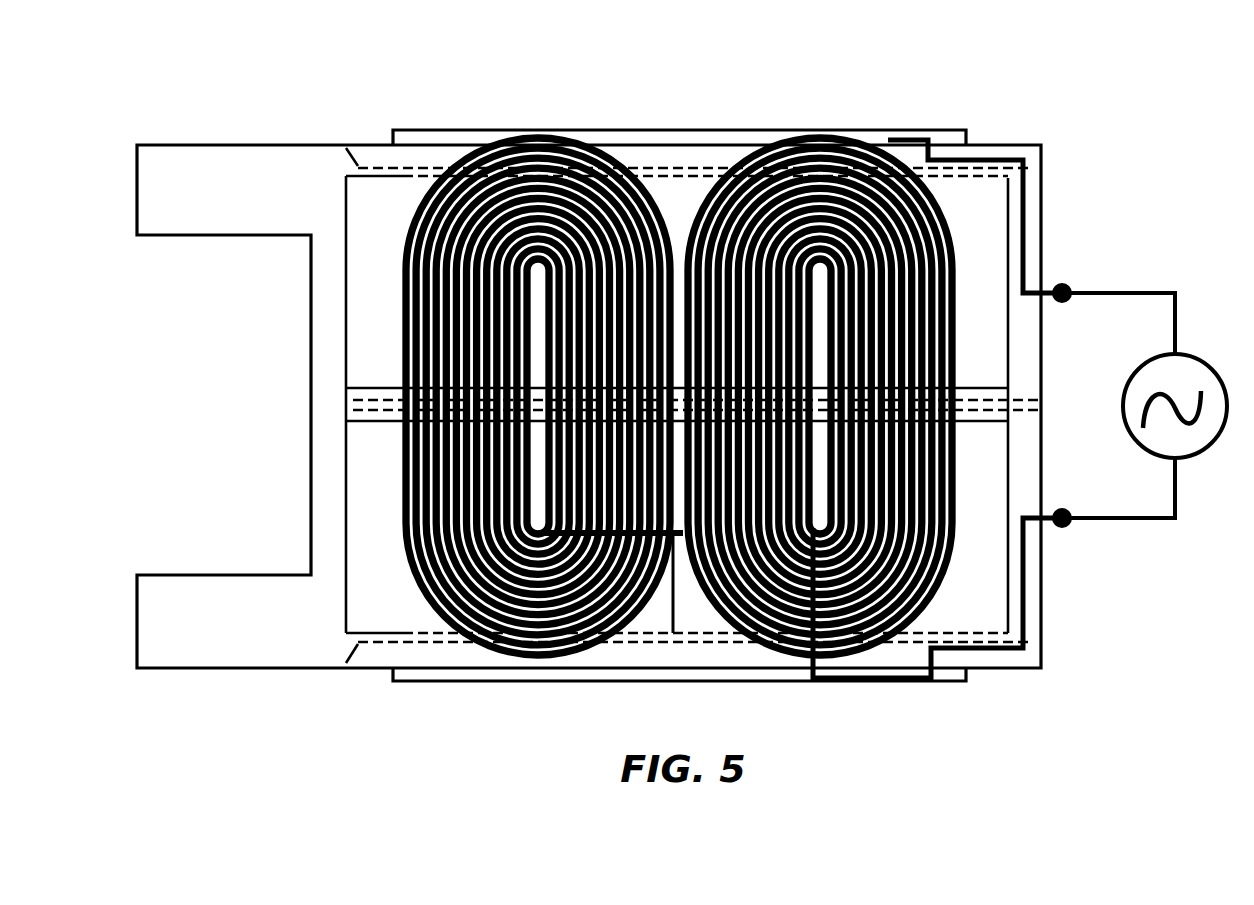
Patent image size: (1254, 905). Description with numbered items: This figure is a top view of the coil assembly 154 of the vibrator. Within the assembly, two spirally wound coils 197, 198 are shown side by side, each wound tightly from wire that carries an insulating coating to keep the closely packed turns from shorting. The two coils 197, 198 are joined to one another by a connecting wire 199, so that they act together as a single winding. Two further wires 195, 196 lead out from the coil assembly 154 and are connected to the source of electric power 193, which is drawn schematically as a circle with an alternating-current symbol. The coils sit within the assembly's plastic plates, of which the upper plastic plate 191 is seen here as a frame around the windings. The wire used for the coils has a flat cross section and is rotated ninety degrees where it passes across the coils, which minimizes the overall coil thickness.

The coil assembly 154 is at (212, 203).
The upper plastic plate 191 is at (420, 655).
The source of electric power 193 is at (1198, 358).
The wire 195 is at (1055, 518).
The wire 196 is at (1054, 280).
The spirally wound coil 197 is at (447, 162).
The spirally wound coil 198 is at (866, 152).
The wire 199 is at (700, 613).